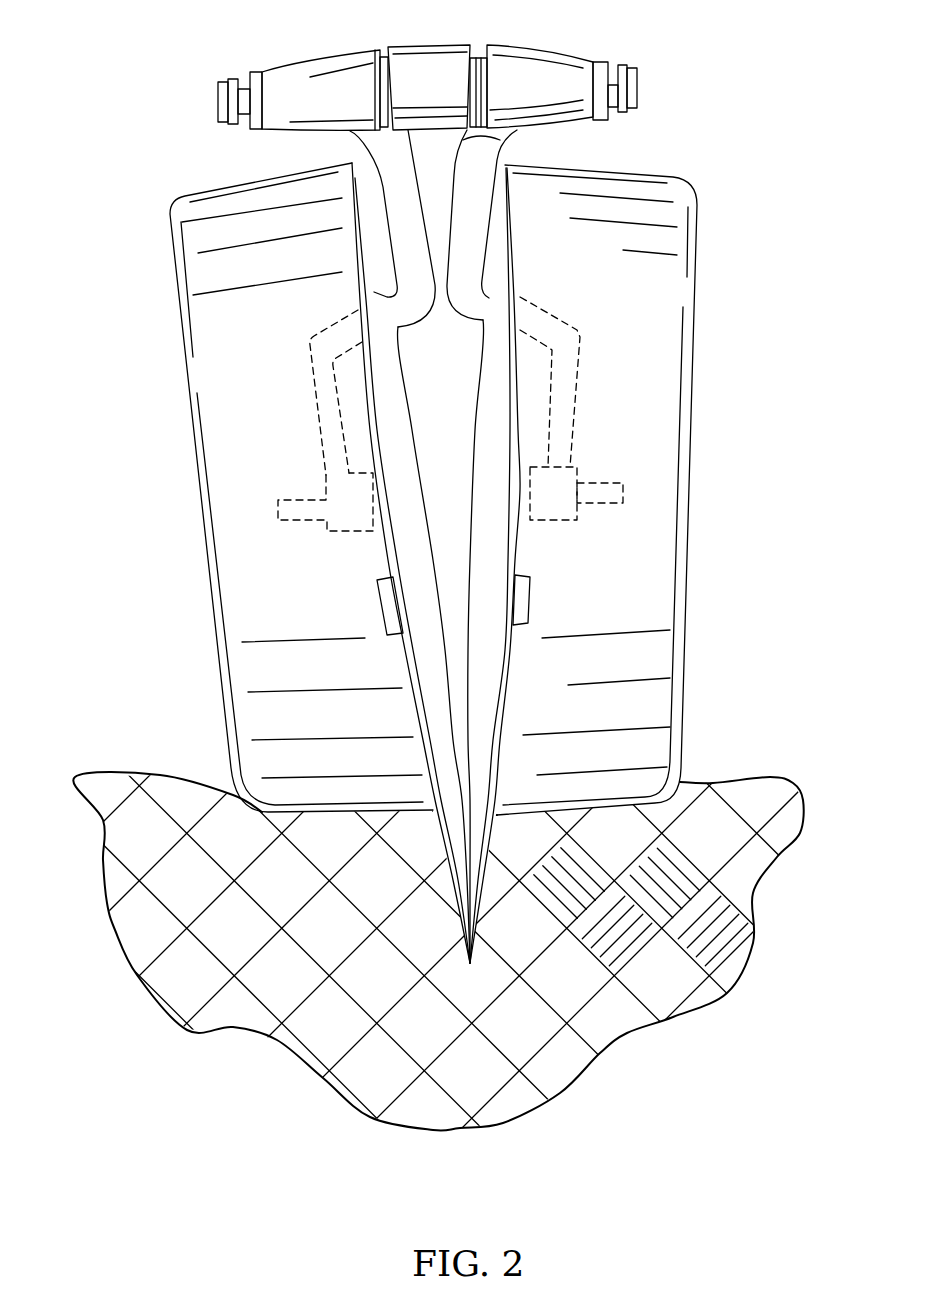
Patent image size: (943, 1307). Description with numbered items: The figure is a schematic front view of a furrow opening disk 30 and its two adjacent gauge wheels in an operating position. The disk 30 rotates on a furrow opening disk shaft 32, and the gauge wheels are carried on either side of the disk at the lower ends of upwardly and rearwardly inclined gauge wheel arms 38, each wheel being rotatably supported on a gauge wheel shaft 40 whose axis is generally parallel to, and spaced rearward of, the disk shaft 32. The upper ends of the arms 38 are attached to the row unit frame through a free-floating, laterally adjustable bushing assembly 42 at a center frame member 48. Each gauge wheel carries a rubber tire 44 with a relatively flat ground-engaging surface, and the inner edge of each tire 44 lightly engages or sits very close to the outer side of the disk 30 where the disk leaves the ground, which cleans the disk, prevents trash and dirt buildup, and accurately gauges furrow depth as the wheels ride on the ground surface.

The furrow opening disk 30 is at (480, 687).
The furrow opening disk shaft 32 is at (532, 598).
The gauge wheel arm 38 is at (408, 237).
The gauge wheel shaft 40 is at (610, 483).
The bushing assembly 42 is at (431, 66).
The rubber tire 44 is at (212, 378).
The center frame member 48 is at (427, 44).